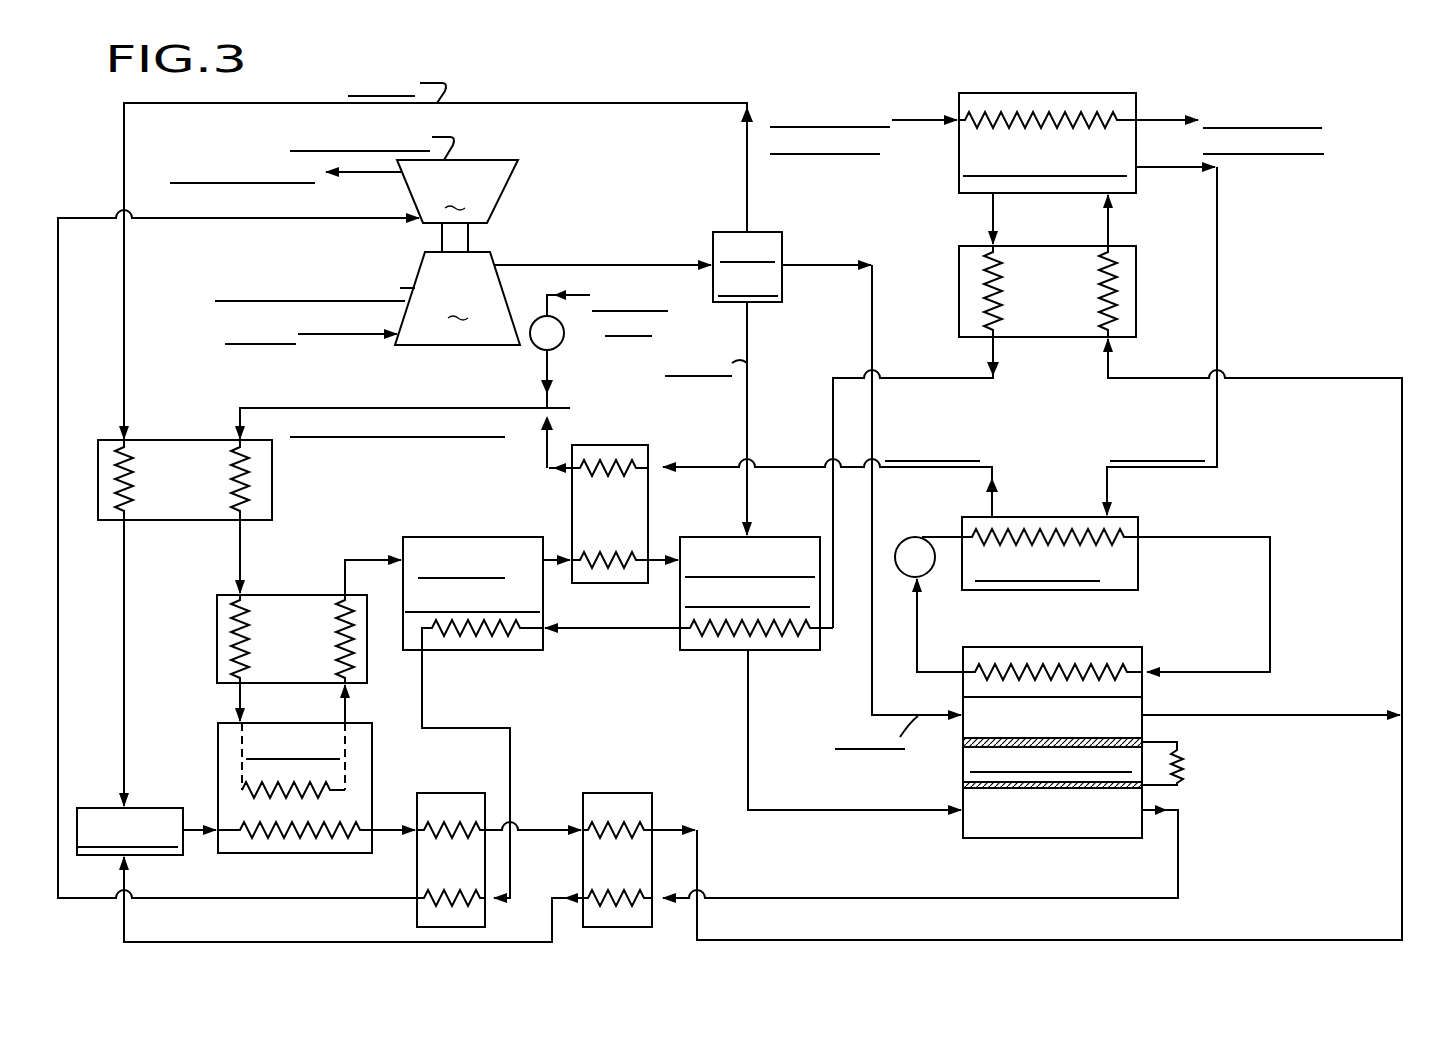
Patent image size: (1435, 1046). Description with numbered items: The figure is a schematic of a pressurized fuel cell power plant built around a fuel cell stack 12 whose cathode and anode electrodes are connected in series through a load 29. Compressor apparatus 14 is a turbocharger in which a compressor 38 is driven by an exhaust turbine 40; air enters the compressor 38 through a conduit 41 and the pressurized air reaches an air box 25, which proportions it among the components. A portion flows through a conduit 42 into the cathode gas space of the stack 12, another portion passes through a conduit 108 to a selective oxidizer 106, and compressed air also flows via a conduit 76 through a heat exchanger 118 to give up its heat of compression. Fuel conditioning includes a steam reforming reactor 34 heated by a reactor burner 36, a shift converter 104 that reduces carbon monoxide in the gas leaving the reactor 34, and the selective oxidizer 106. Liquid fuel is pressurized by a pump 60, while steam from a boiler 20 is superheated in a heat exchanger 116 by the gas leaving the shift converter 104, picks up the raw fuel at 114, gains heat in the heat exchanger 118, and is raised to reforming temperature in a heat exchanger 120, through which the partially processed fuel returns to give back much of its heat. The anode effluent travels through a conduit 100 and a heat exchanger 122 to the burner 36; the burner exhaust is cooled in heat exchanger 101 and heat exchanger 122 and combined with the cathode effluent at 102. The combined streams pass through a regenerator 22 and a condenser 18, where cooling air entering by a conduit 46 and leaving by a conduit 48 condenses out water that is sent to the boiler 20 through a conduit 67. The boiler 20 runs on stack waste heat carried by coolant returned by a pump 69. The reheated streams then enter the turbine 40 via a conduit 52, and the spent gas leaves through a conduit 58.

The fuel cell stack 12 is at (933, 844).
The compressor apparatus 14 is at (400, 231).
The condenser 18 is at (1040, 94).
The boiler 20 is at (1068, 491).
The regenerator 22 is at (969, 250).
The air box 25 is at (720, 234).
The load 29 is at (1185, 771).
The steam reforming reactor 34 is at (293, 718).
The reactor burner 36 is at (161, 810).
The compressor 38 is at (367, 298).
The exhaust turbine 40 is at (404, 175).
The conduit 41 is at (312, 342).
The conduit 42 is at (812, 263).
The conduit 46 is at (906, 118).
The conduit 48 is at (1160, 118).
The conduit 52 is at (335, 222).
The conduit 58 is at (332, 178).
The pump 60 is at (562, 346).
The conduit 67 is at (1220, 238).
The pump 69 is at (908, 540).
The conduit 76 is at (747, 152).
The conduit 100 is at (1180, 822).
The heat exchanger 101 is at (440, 800).
The combination point 102 is at (1399, 720).
The shift converter 104 is at (440, 542).
The selective oxidizer 106 is at (787, 545).
The conduit 108 is at (747, 399).
The fuel pickup point 114 is at (566, 415).
The heat exchanger 116 is at (603, 450).
The heat exchanger 118 is at (172, 446).
The heat exchanger 120 is at (287, 602).
The heat exchanger 122 is at (619, 800).